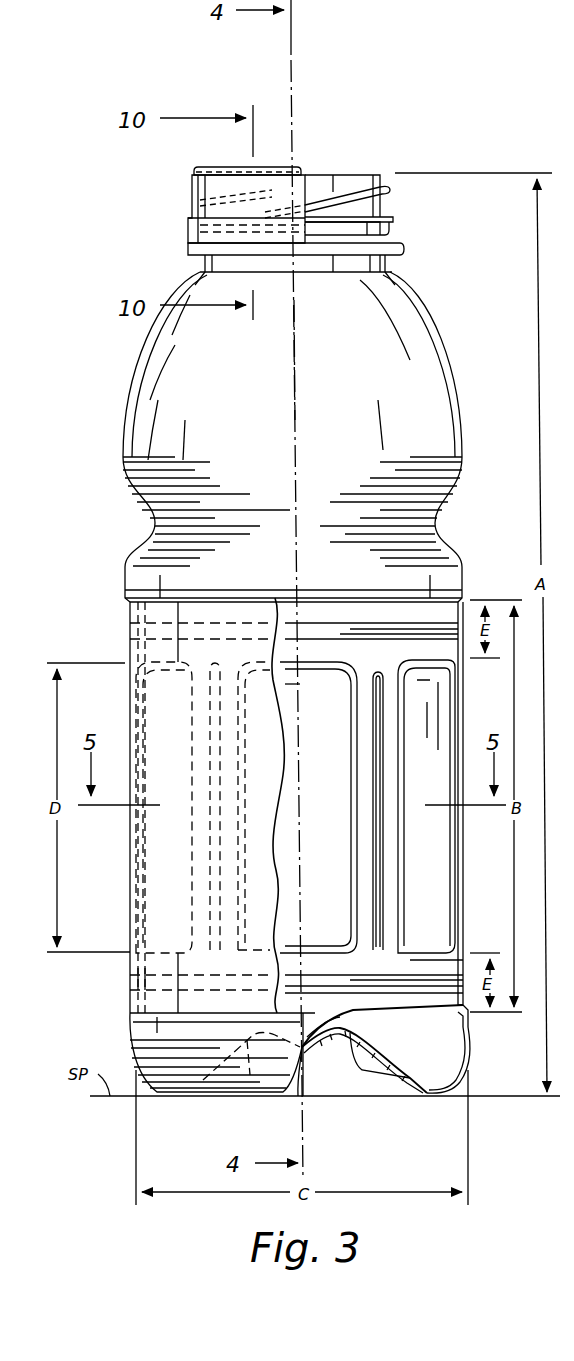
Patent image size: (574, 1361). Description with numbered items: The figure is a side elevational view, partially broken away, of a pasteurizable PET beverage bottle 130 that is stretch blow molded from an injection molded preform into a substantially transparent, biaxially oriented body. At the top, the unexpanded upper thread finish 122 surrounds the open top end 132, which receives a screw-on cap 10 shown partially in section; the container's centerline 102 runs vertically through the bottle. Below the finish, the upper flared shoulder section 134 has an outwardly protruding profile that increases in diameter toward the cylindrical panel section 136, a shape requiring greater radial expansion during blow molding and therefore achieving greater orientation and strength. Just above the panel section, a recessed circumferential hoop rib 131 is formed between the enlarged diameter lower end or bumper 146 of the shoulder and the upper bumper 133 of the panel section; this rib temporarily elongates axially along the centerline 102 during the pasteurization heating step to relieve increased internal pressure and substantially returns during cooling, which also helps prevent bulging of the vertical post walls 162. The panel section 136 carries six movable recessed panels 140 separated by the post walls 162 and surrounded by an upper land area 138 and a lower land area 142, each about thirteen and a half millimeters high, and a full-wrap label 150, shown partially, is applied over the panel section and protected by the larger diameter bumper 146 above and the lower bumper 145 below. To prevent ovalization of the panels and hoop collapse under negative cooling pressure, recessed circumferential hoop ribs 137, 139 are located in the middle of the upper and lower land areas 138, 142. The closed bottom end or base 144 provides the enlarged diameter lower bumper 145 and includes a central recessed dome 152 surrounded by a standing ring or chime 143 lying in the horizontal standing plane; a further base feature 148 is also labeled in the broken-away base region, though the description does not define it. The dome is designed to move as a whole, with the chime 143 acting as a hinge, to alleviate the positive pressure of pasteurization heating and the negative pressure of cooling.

The screw-on cap 10 is at (184, 201).
The centerline 102 is at (297, 392).
The upper thread finish 122 is at (388, 208).
The bottle 130 is at (128, 362).
The recessed circumferential hoop rib 131 is at (440, 523).
The open top end 132 is at (355, 172).
The upper bumper 133 is at (468, 470).
The upper flared shoulder section 134 is at (440, 367).
The cylindrical panel section 136 is at (470, 889).
The recessed circumferential hoop rib 137 is at (465, 593).
The upper land area 138 is at (158, 648).
The recessed circumferential hoop rib 139 is at (387, 1005).
The movable recessed panels 140 is at (148, 717).
The lower land area 142 is at (414, 1000).
The standing ring or chime 143 is at (164, 1102).
The base 144 is at (474, 1060).
The lower bumper 145 is at (468, 1028).
The bumper 146 is at (455, 574).
The base rib 148 is at (353, 1057).
The full-wrap label 150 is at (133, 965).
The central recessed dome 152 is at (388, 1092).
The vertical post walls 162 is at (390, 686).